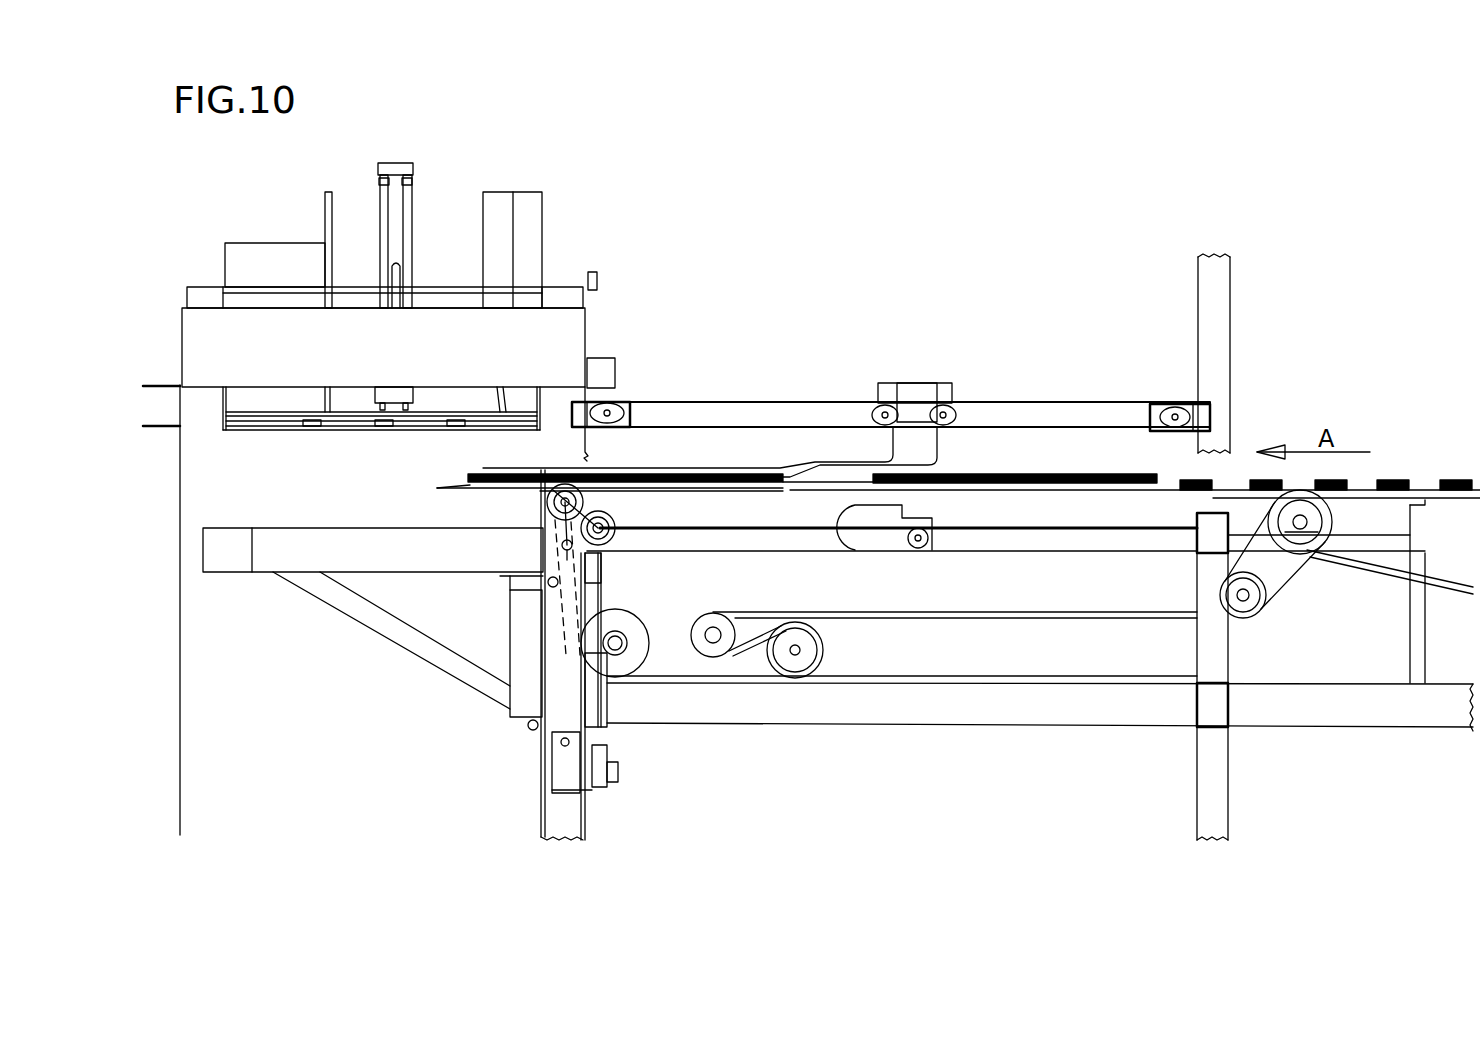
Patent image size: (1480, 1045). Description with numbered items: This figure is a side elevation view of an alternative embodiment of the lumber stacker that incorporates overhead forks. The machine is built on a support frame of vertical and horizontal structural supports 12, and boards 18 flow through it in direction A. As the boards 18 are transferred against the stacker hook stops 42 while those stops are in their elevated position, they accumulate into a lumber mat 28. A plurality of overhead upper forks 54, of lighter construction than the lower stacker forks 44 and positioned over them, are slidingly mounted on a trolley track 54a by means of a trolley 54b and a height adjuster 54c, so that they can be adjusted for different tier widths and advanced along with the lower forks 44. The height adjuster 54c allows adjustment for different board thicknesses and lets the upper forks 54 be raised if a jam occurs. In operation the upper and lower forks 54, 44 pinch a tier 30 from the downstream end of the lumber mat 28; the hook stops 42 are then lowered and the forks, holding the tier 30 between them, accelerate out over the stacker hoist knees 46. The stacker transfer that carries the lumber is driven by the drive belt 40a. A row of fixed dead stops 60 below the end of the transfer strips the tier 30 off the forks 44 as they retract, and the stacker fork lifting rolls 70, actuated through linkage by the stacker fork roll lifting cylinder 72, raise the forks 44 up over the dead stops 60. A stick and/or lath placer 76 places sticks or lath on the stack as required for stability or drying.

The structural supports 12 is at (1215, 313).
The boards 18 is at (1390, 480).
The lumber mat 28 is at (1025, 478).
The tier 30 is at (665, 490).
The drive belt 40a is at (975, 620).
The stacker hook stops 42 is at (545, 478).
The stacker forks 44 is at (842, 505).
The stacker hoist knees 46 is at (390, 558).
The overhead upper forks 54 is at (793, 463).
The trolley track 54a is at (1040, 410).
The trolley 54b is at (920, 384).
The height adjuster 54c is at (617, 402).
The fixed dead stops 60 is at (545, 503).
The stacker fork lifting rolls 70 is at (590, 473).
The stacker fork roll lifting cylinder 72 is at (595, 790).
The stick and/or lath placer 76 is at (478, 332).